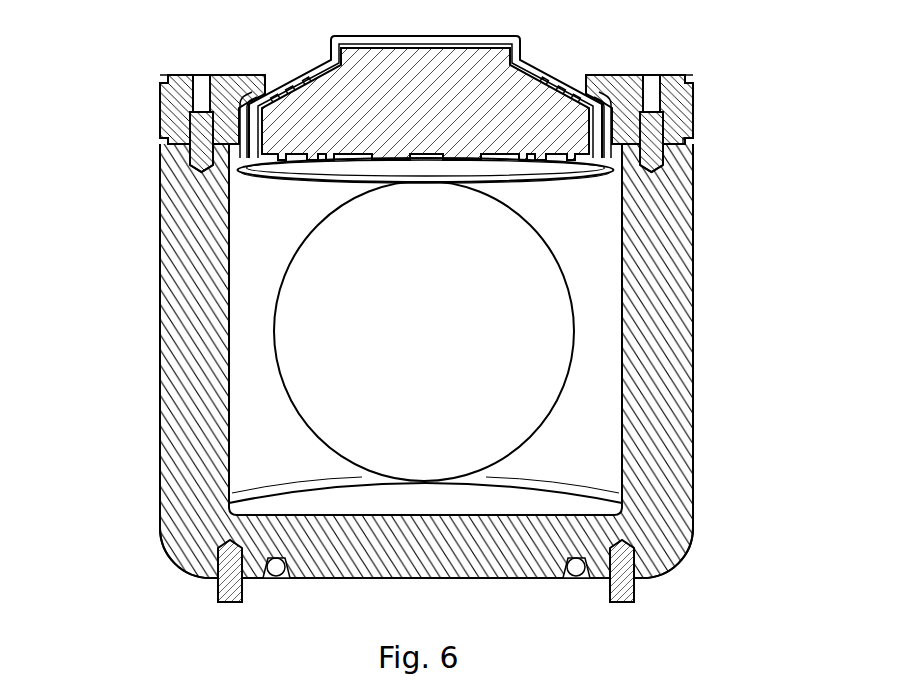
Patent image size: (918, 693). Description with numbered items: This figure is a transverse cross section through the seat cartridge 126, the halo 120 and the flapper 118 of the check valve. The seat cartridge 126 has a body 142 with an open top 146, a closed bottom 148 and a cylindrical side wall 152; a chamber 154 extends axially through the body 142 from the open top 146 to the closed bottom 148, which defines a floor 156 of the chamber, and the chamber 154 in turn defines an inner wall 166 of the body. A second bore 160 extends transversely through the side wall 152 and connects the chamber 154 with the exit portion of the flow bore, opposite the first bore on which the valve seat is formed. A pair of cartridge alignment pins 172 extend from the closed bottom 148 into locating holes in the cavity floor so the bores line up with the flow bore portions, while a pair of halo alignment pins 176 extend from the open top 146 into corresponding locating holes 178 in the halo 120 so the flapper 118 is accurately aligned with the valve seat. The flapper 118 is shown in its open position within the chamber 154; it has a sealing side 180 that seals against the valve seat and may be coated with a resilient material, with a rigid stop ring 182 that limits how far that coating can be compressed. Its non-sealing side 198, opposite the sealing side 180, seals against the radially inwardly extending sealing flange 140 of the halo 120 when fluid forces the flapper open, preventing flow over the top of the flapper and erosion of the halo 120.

The flapper 118 is at (439, 121).
The halo 120 is at (667, 77).
The seat cartridge 126 is at (133, 545).
The sealing flange 140 is at (577, 80).
The body 142 is at (155, 355).
The open top 146 is at (687, 140).
The closed bottom 148 is at (683, 553).
The side wall 152 is at (693, 293).
The chamber 154 is at (605, 386).
The floor 156 is at (560, 515).
The second bore 160 is at (312, 427).
The inner wall 166 is at (622, 276).
The cartridge alignment pins 172 is at (243, 592).
The halo alignment pins 176 is at (196, 172).
The locating holes 178 is at (199, 127).
The sealing side 180 is at (478, 166).
The stop ring 182 is at (267, 160).
The non-sealing side 198 is at (607, 93).